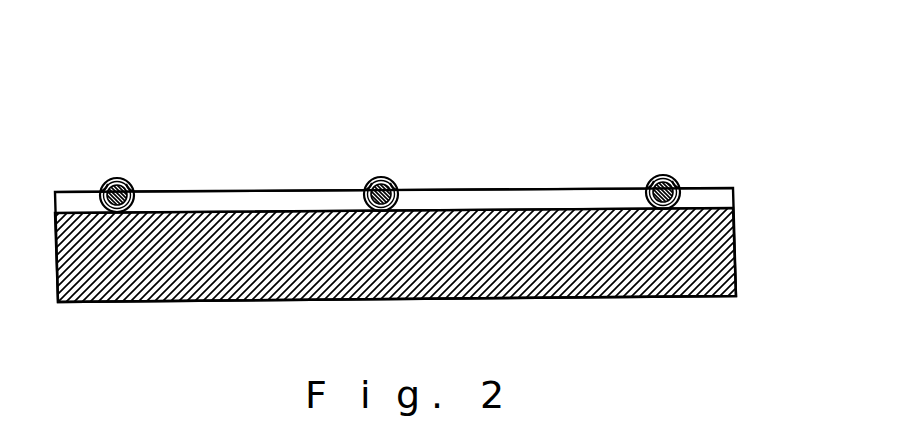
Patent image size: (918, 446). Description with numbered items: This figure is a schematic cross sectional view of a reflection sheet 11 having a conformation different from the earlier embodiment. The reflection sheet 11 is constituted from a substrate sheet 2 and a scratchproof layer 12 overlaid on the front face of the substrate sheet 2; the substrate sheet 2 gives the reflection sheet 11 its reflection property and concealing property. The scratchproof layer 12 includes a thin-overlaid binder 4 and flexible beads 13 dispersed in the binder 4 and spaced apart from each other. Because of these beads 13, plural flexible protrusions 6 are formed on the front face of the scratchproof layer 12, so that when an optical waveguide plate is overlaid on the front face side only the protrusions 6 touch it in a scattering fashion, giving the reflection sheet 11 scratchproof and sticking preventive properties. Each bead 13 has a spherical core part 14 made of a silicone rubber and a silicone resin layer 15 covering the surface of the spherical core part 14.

The substrate sheet 2 is at (737, 257).
The binder 4 is at (580, 202).
The protrusions 6 is at (668, 166).
The reflection sheet 11 is at (181, 156).
The scratchproof layer 12 is at (735, 195).
The beads 13 is at (365, 180).
The spherical core part 14 is at (372, 177).
The silicone resin layer 15 is at (393, 182).